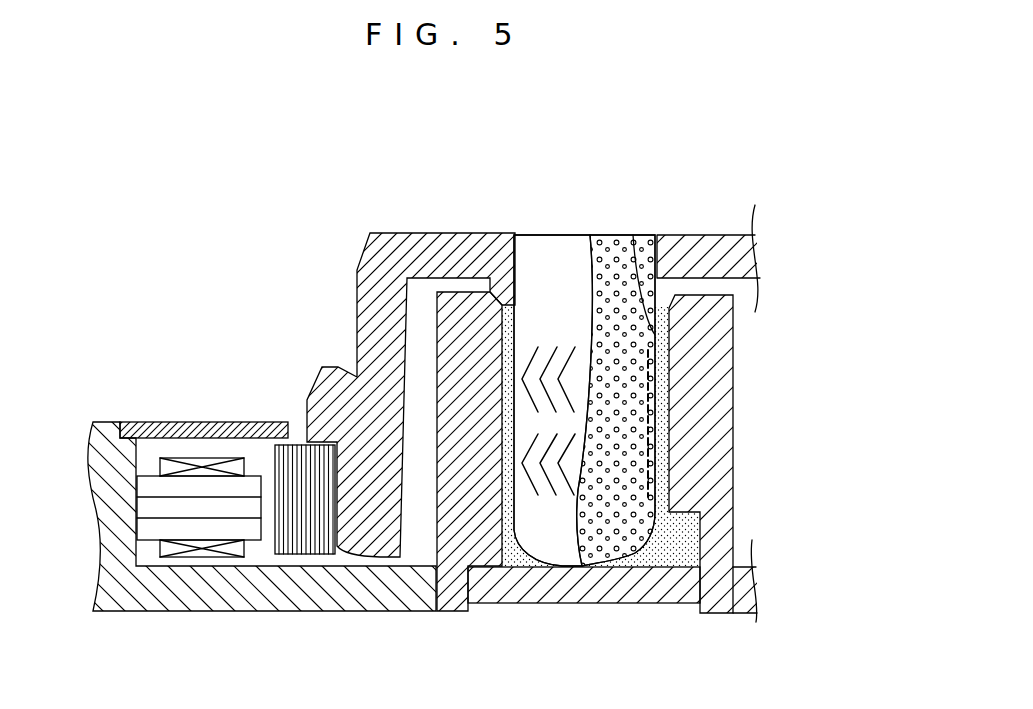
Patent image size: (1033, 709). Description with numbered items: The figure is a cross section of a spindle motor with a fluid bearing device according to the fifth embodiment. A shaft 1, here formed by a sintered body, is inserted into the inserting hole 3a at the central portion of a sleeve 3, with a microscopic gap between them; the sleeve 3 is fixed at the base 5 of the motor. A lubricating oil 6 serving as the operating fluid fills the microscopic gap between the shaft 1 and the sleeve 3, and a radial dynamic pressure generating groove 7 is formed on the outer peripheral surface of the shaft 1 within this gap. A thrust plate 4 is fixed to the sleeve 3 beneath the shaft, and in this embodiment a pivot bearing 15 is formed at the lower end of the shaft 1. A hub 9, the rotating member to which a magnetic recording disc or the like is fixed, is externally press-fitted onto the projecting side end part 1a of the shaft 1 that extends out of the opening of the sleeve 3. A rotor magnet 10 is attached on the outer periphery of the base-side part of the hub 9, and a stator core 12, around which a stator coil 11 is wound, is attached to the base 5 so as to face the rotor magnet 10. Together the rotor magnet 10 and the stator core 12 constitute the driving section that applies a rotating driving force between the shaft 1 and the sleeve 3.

The shaft 1 is at (625, 540).
The projecting side end part 1a is at (547, 275).
The sleeve 3 is at (713, 415).
The inserting hole 3a is at (632, 268).
The thrust plate 4 is at (505, 583).
The base 5 is at (380, 583).
The lubricating oil 6 is at (508, 305).
The radial dynamic pressure generating groove 7 is at (525, 455).
The hub 9 is at (413, 248).
The rotor magnet 10 is at (300, 550).
The stator coil 11 is at (200, 553).
The stator core 12 is at (180, 487).
The pivot bearing 15 is at (563, 566).